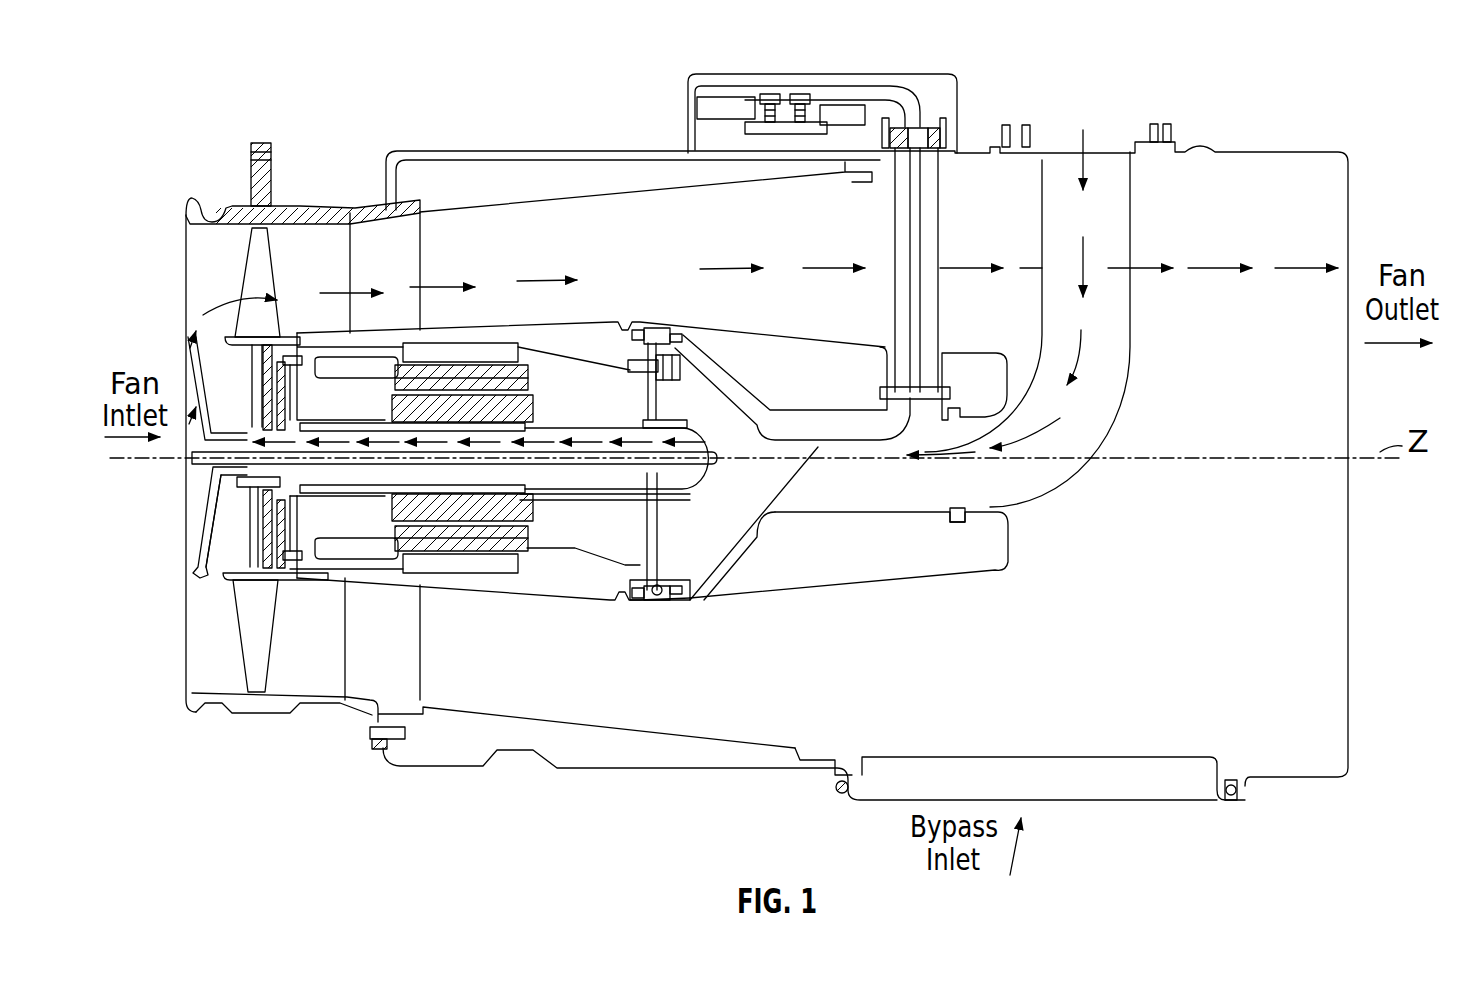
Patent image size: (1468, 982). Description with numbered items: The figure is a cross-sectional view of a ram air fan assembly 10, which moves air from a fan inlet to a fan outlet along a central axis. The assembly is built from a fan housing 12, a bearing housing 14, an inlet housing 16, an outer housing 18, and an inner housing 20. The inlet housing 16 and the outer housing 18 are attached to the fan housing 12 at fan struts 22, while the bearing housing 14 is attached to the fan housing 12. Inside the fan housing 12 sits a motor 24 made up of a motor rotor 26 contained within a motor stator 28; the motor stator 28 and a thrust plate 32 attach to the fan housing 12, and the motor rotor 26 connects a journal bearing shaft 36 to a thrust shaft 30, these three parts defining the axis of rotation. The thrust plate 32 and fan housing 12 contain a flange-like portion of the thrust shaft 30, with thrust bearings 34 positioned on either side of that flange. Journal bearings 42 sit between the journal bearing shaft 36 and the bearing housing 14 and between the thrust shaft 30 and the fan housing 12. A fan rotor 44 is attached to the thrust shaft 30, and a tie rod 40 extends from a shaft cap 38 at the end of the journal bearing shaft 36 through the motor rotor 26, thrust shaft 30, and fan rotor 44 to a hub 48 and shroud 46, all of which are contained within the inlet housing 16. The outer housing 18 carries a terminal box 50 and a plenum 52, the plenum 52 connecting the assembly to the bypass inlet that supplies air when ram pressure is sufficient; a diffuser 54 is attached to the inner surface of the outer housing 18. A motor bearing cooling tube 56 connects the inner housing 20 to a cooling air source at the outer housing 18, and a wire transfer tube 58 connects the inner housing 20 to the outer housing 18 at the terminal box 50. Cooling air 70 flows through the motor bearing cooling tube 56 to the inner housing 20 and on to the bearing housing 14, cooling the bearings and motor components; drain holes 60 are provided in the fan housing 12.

The ram air fan assembly 10 is at (172, 106).
The fan housing 12 is at (333, 412).
The bearing housing 14 is at (690, 585).
The inlet housing 16 is at (236, 712).
The outer housing 18 is at (445, 770).
The inner housing 20 is at (935, 575).
The fan struts 22 is at (368, 232).
The motor 24 is at (470, 588).
The motor rotor 26 is at (470, 508).
The motor stator 28 is at (393, 567).
The thrust shaft 30 is at (343, 497).
The thrust plate 32 is at (245, 523).
The thrust bearings 34 is at (197, 333).
The journal bearing shaft 36 is at (695, 372).
The shaft cap 38 is at (745, 520).
The tie rod 40 is at (722, 458).
The journal bearings 42 is at (328, 418).
The fan rotor 44 is at (255, 617).
The shroud 46 is at (197, 512).
The hub 48 is at (225, 447).
The terminal box 50 is at (888, 70).
The plenum 52 is at (1127, 755).
The diffuser 54 is at (728, 740).
The motor bearing cooling tube 56 is at (1132, 212).
The wire transfer tube 58 is at (942, 226).
The drain holes 60 is at (621, 312).
The cooling air 70 is at (1085, 138).